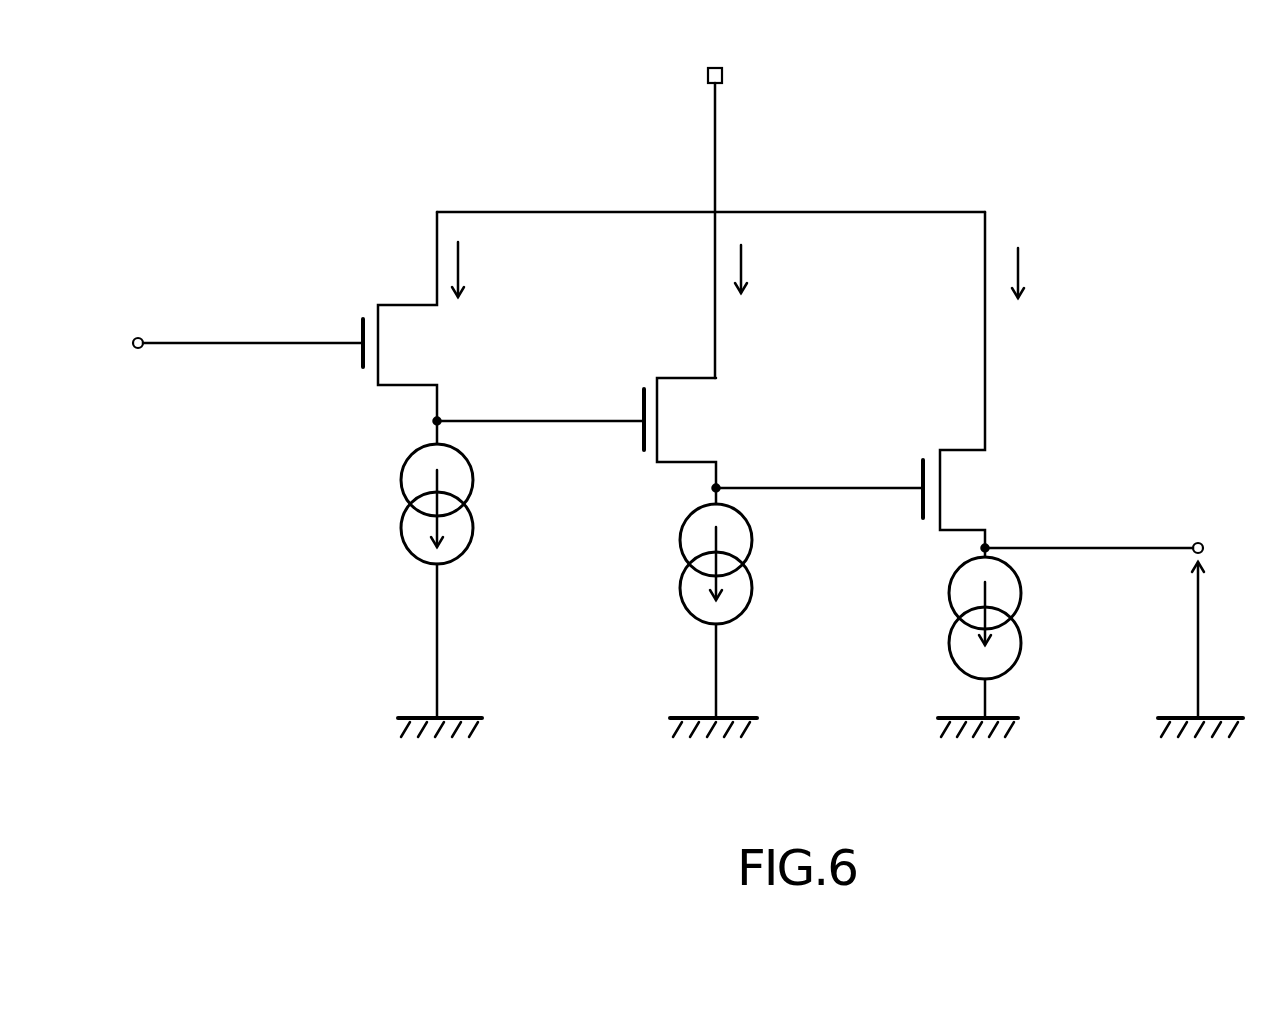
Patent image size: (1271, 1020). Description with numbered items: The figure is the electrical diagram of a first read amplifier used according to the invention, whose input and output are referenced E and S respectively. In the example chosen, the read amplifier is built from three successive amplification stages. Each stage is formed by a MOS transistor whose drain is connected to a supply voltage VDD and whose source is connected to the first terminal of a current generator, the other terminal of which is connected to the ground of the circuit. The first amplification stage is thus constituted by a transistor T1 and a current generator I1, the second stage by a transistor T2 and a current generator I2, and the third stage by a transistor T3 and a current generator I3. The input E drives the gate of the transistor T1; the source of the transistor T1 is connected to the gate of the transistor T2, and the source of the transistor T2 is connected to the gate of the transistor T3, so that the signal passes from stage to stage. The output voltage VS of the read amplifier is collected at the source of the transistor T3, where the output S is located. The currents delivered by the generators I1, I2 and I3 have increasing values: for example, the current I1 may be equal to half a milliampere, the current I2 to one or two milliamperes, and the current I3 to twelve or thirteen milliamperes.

The transistor T1 is at (408, 293).
The transistor T2 is at (675, 370).
The transistor T3 is at (908, 448).
The current generator I1 is at (380, 589).
The current generator I2 is at (650, 628).
The current generator I3 is at (923, 655).
The input E is at (236, 330).
The output S is at (1100, 529).
The supply voltage VDD is at (740, 203).
The output voltage VS is at (1212, 649).